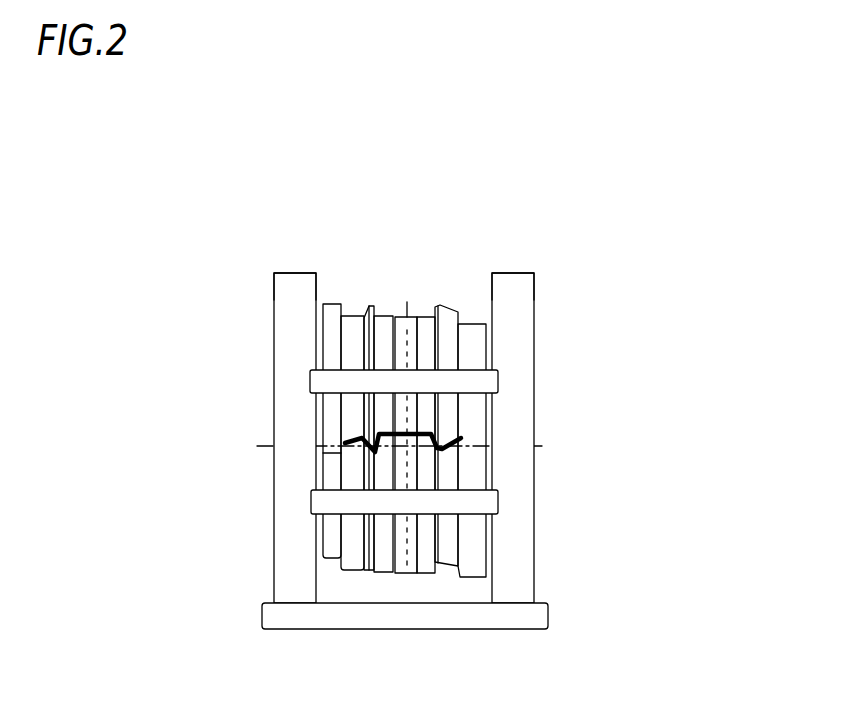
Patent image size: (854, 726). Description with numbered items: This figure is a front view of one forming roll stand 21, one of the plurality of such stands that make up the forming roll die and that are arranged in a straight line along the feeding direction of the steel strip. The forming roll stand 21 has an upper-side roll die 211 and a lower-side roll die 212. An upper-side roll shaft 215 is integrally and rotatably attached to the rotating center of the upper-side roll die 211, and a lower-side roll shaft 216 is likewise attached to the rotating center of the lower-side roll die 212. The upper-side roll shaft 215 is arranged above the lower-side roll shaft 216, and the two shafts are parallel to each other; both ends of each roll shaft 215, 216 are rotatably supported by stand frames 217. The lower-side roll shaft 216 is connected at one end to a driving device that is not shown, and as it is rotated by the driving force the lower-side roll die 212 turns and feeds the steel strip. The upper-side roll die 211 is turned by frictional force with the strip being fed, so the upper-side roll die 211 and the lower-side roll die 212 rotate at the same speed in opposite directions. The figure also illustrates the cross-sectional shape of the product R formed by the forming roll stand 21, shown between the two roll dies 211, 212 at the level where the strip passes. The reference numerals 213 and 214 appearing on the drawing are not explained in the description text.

The forming roll stand 21 is at (246, 256).
The upper-side roll die 211 is at (421, 316).
The lower-side roll die 212 is at (382, 568).
The side plate 213 is at (532, 429).
The side plate 214 is at (287, 418).
The upper-side roll shaft 215 is at (485, 381).
The lower-side roll shaft 216 is at (312, 506).
The stand frames 217 is at (293, 278).
The product R is at (372, 447).